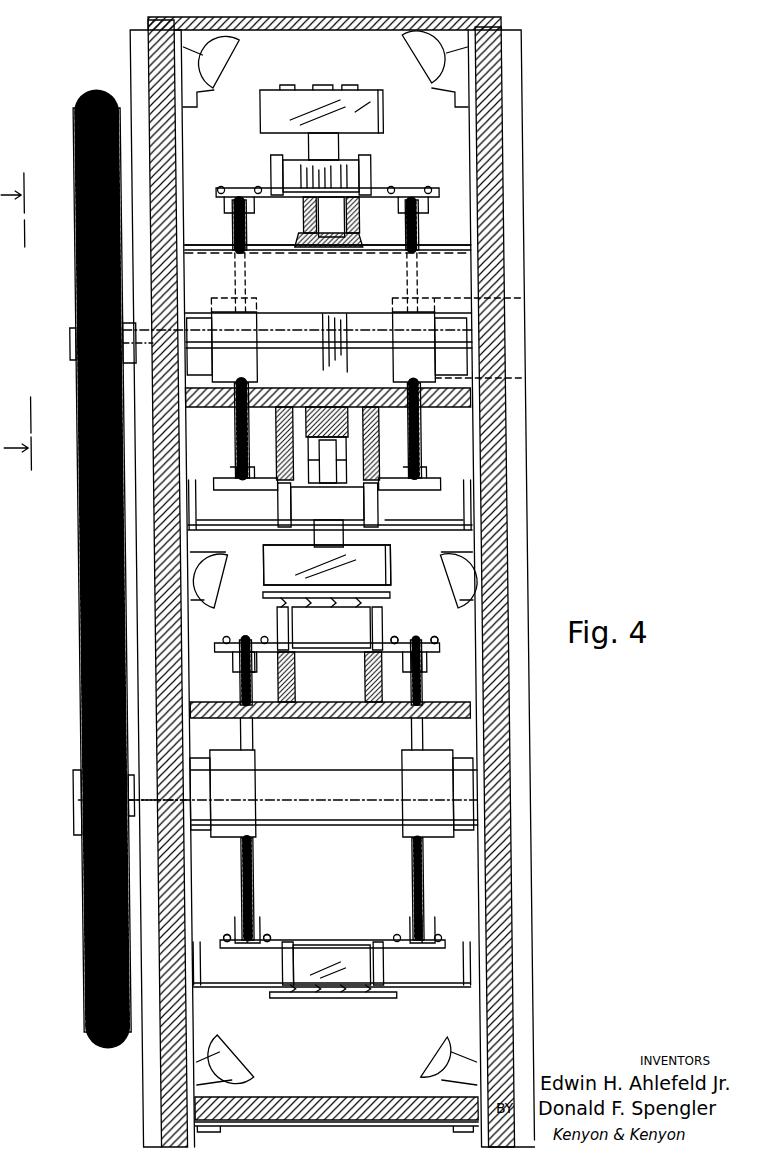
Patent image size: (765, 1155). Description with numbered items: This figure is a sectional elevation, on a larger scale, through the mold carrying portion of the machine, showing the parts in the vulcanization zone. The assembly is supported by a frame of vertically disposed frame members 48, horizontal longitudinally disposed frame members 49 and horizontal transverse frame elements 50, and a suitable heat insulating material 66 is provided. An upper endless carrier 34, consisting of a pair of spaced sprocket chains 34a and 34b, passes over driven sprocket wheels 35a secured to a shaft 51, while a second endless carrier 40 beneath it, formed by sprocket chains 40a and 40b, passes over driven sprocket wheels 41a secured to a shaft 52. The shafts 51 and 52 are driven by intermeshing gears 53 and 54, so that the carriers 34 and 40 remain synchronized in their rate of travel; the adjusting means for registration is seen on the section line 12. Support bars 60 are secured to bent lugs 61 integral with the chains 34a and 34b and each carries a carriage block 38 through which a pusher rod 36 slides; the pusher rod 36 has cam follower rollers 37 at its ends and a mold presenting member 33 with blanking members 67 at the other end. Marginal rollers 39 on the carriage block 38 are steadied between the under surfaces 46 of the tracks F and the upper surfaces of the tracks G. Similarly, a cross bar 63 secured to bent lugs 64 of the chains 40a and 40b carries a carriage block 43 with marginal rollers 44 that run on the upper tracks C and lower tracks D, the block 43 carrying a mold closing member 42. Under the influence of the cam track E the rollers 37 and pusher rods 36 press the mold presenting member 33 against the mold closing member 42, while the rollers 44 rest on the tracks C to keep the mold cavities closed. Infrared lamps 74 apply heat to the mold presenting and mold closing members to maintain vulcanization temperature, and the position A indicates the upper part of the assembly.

The section line 12— 12 is at (35, 321).
The mold presenting member 33 is at (258, 560).
The upper endless carrier 34 is at (437, 212).
The sprocket chain 34a is at (221, 339).
The sprocket chain 34b is at (436, 339).
The driven sprocket wheel 35a is at (416, 452).
The pusher rod 36 is at (345, 540).
The cam follower roller 37 is at (304, 460).
The carriage block 38 is at (345, 511).
The marginal roller 39 is at (290, 496).
The second endless carrier 40 is at (436, 919).
The sprocket chain 40a is at (235, 664).
The sprocket chain 40b is at (434, 663).
The driven sprocket wheel 41a is at (410, 893).
The mold closing member 42 is at (318, 998).
The carriage block 43 is at (348, 948).
The marginal roller 44 is at (392, 968).
The under surface 46 is at (341, 491).
The vertically disposed frame member 48 is at (523, 240).
The horizontal longitudinally disposed frame member 49 is at (365, 716).
The horizontal transverse frame element 50 is at (457, 265).
The shaft 51 is at (270, 320).
The shaft 52 is at (300, 815).
The gear 53 is at (73, 268).
The gear 54 is at (80, 727).
The support bar 60 is at (188, 860).
The bent lug 61 is at (390, 202).
The cross bar 63 is at (262, 960).
The bent lug 64 is at (334, 675).
The heat insulating material 66 is at (483, 455).
The blanking member 67 is at (332, 85).
The infrared lamp 74 is at (428, 1065).
The station A is at (318, 250).
The upper track C is at (356, 680).
The lower track D is at (445, 985).
The cam track E is at (330, 415).
The track F is at (374, 458).
The track G is at (330, 512).